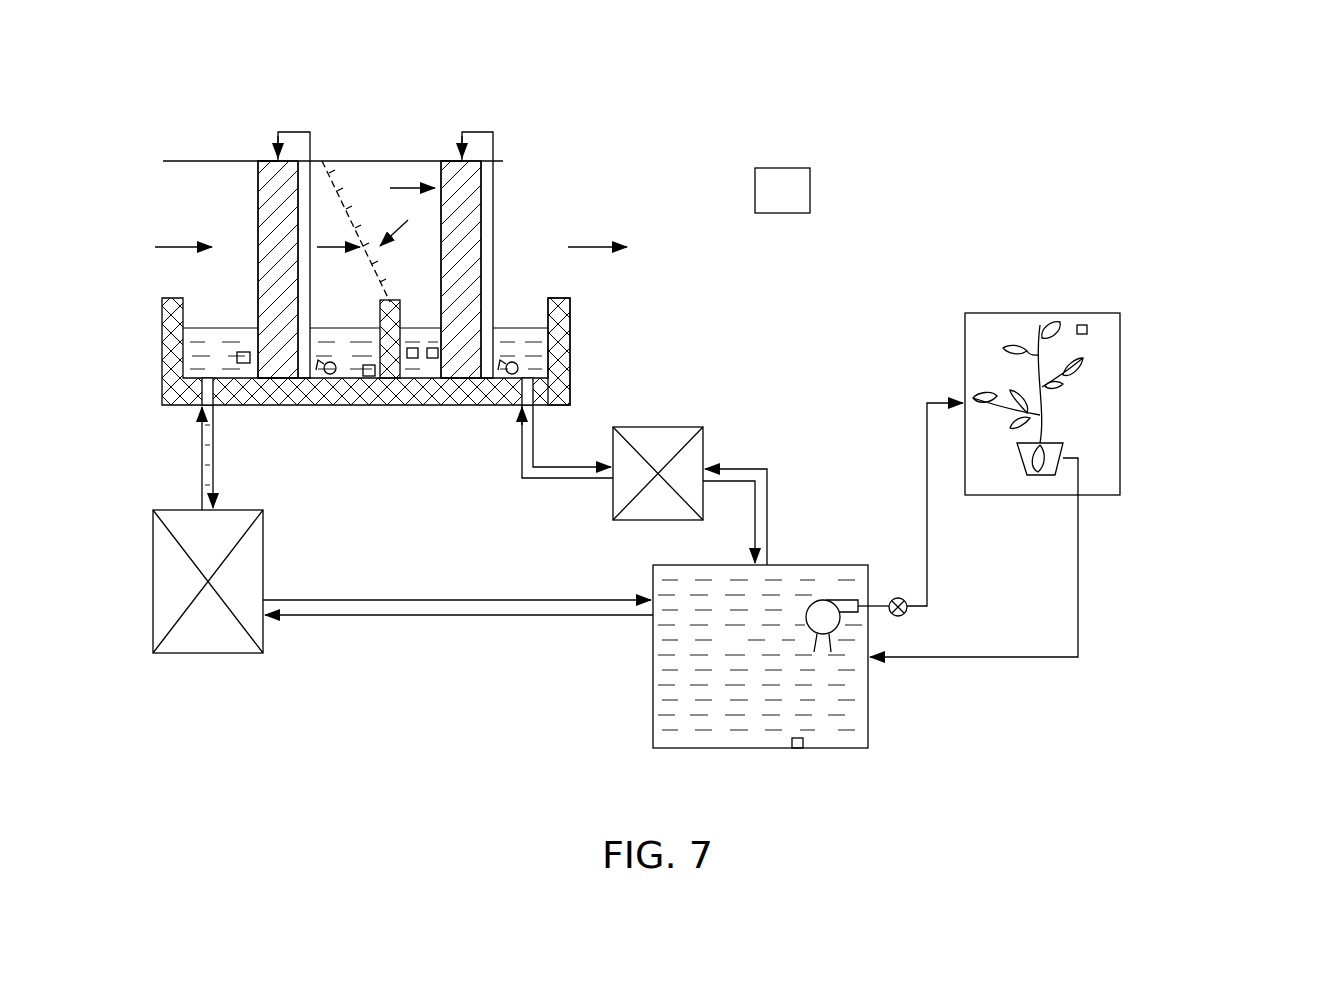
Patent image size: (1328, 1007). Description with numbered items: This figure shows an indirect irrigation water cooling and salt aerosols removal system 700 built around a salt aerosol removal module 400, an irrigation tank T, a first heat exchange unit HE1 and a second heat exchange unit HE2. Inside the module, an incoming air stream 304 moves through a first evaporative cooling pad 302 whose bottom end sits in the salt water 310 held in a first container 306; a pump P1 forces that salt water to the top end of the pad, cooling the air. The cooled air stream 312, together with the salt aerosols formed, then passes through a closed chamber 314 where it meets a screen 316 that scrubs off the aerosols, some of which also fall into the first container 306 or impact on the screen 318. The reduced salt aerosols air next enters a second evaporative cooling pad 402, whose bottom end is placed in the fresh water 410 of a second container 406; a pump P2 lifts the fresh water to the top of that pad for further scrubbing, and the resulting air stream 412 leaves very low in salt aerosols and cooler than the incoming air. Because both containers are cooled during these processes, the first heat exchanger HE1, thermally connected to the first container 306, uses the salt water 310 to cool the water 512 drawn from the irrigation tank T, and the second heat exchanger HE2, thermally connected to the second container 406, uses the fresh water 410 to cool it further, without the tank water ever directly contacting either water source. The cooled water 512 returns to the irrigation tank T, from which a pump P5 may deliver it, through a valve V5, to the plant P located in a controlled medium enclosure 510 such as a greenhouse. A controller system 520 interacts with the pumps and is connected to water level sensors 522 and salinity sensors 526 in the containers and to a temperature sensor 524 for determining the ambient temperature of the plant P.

The indirect irrigation water cooling and salt aerosols removal system 700 is at (1216, 87).
The salt aerosol removal module 400 is at (308, 98).
The first evaporative cooling pad 302 is at (270, 158).
The incoming air stream 304 is at (188, 245).
The cooled air stream 312 is at (333, 243).
The second evaporative cooling pad 402 is at (451, 158).
The closed chamber 314 is at (367, 306).
The screen 318 is at (348, 213).
The screen 316 is at (406, 219).
The resulting air stream 412 is at (593, 245).
The first container 306 is at (162, 335).
The second container 406 is at (572, 323).
The salt water 310 is at (345, 380).
The fresh water 410 is at (415, 380).
The water level sensor 522 is at (243, 364).
The salinity sensor 526 is at (412, 346).
The controller system 520 is at (810, 190).
The controlled medium enclosure 510 is at (1015, 313).
The temperature sensor 524 is at (1083, 323).
The water 512 is at (710, 735).
The pump P1 is at (330, 376).
The pump P2 is at (512, 360).
The pump P5 is at (825, 600).
The valve V5 is at (897, 597).
The first heat exchange unit HE1 is at (153, 585).
The second heat exchange unit HE2 is at (659, 427).
The irrigation tank T is at (747, 660).
The plant P is at (1043, 410).